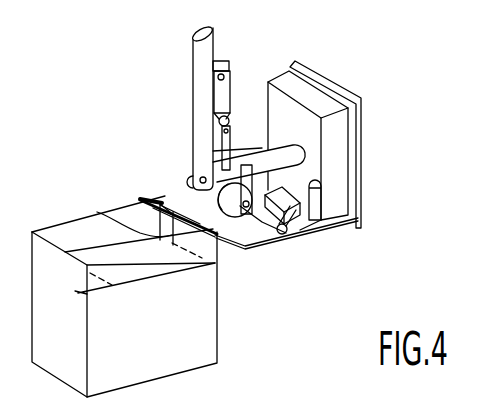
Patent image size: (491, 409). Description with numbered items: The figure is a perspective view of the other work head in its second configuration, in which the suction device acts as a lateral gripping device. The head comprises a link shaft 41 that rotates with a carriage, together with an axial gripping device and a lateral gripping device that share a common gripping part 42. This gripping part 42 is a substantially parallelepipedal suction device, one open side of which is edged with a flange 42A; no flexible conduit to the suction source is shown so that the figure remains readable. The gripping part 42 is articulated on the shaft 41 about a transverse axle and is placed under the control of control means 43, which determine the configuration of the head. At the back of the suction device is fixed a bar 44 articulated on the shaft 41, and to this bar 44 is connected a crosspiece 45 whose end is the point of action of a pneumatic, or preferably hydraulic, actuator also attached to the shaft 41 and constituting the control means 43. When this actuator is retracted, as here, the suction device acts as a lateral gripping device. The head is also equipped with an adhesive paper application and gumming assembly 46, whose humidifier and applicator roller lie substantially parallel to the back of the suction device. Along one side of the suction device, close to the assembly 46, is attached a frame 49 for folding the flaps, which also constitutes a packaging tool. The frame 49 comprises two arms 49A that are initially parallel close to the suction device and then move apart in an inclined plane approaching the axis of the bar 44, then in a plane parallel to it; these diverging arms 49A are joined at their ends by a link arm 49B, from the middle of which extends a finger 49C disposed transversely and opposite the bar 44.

The link shaft 41 is at (199, 70).
The gripping part 42 is at (361, 160).
The flange 42A is at (310, 69).
The control means 43 is at (231, 92).
The bar 44 is at (260, 157).
The crosspiece 45 is at (227, 152).
The adhesive paper application and gumming assembly 46 is at (292, 226).
The frame 49 is at (276, 245).
The arms 49A is at (222, 214).
The link arm 49B is at (146, 201).
The finger 49C is at (97, 212).